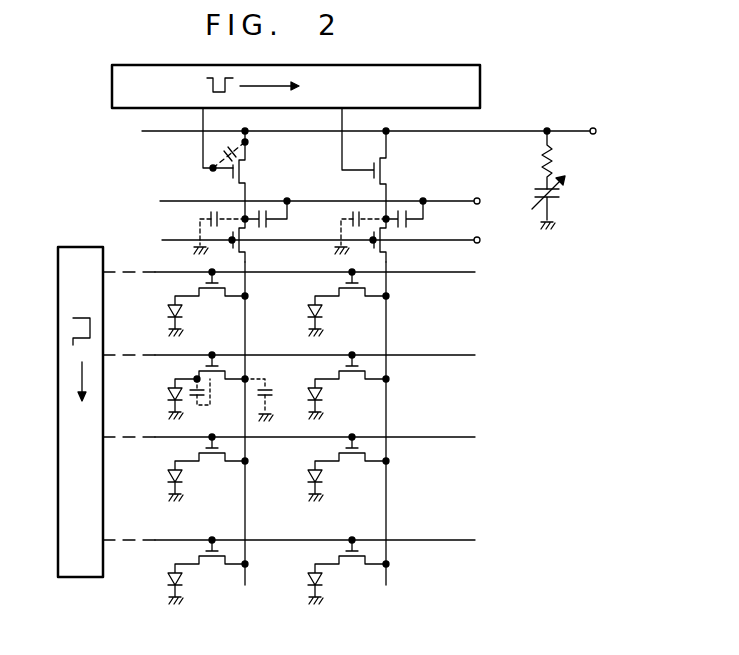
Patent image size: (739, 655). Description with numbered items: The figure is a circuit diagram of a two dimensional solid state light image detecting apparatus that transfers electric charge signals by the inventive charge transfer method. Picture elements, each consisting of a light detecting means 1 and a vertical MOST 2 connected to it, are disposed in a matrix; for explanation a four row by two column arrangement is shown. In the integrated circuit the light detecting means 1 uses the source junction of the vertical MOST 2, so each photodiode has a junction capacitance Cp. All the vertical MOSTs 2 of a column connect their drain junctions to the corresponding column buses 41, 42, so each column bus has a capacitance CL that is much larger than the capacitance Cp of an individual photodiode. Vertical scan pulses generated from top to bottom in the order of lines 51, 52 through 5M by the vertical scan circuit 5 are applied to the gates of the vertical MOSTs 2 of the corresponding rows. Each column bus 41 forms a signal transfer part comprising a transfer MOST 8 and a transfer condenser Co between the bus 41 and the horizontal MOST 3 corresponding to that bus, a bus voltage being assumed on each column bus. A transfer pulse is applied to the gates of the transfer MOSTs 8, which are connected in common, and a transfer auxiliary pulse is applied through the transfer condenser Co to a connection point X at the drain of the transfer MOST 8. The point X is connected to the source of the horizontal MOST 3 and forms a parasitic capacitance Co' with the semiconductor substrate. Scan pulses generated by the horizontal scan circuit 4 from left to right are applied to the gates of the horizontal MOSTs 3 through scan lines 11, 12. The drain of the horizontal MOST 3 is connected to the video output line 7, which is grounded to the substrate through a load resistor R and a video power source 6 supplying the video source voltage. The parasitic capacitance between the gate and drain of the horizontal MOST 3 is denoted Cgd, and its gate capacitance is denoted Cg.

The light detecting means 1 is at (168, 392).
The vertical MOST 2 is at (214, 380).
The horizontal MOST 3 is at (254, 174).
The horizontal scan circuit 4 is at (480, 75).
The vertical scan circuit 5 is at (87, 247).
The video power source 6 is at (562, 192).
The video output line 7 is at (597, 130).
The transfer MOST 8 is at (249, 252).
The scan line 11 is at (198, 127).
The scan line 12 is at (346, 138).
The column bus 41 is at (247, 312).
The column bus 42 is at (388, 312).
The vertical scan line 51 is at (475, 272).
The vertical scan line 52 is at (475, 355).
The vertical scan line 5M is at (475, 540).
The load resistor R is at (538, 161).
The connection point X is at (250, 215).
The gate-drain parasitic capacitance Cgd is at (252, 148).
The gate capacitance Cg is at (232, 178).
The transfer condenser Co is at (278, 221).
The parasitic capacitance Co' is at (196, 231).
The junction capacitance Cp is at (208, 406).
The column bus capacitance CL is at (282, 383).